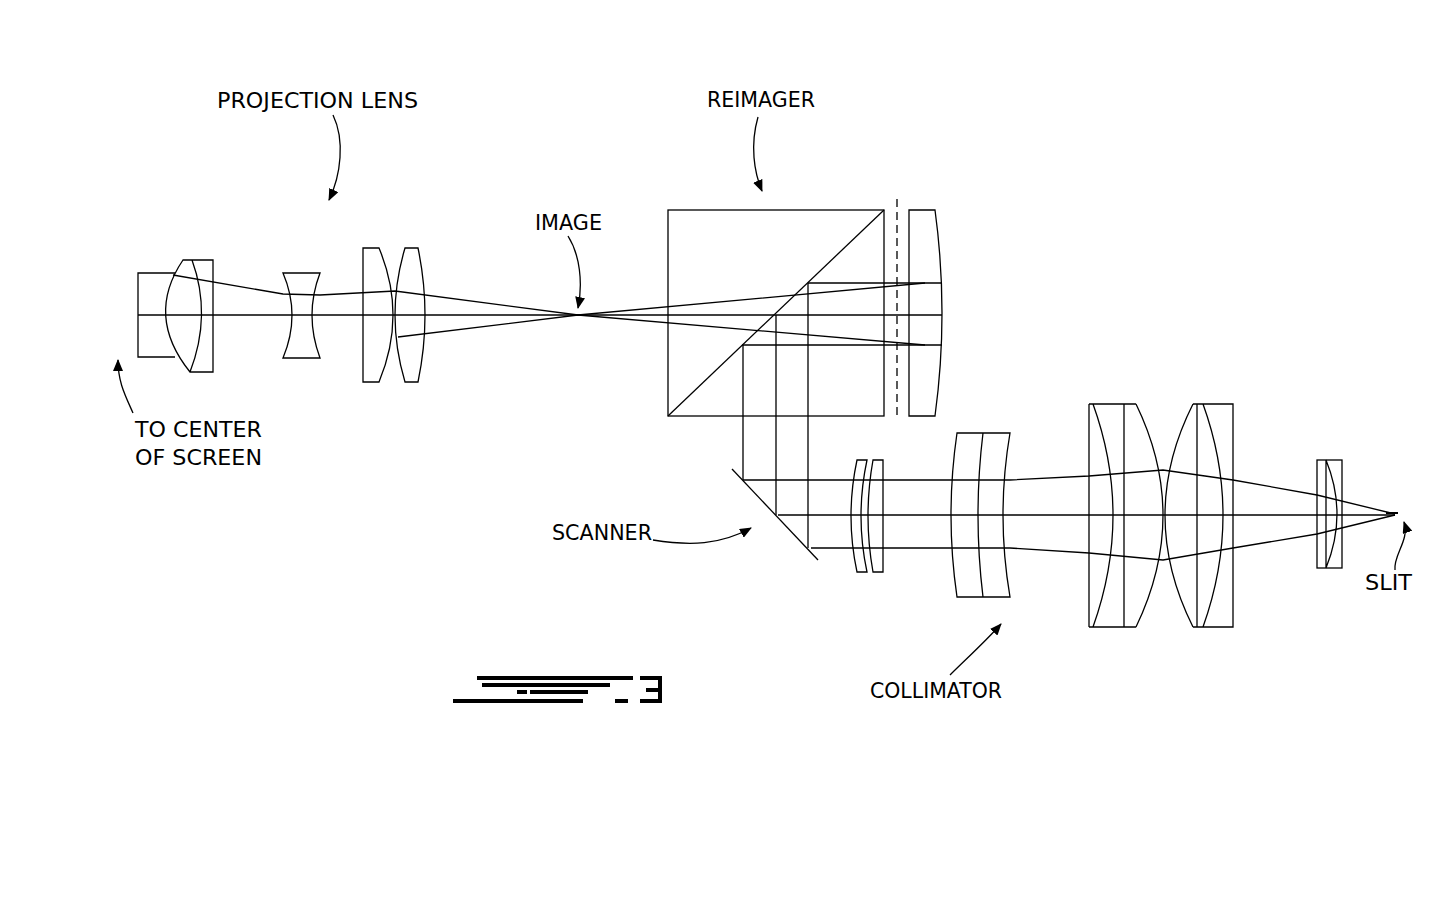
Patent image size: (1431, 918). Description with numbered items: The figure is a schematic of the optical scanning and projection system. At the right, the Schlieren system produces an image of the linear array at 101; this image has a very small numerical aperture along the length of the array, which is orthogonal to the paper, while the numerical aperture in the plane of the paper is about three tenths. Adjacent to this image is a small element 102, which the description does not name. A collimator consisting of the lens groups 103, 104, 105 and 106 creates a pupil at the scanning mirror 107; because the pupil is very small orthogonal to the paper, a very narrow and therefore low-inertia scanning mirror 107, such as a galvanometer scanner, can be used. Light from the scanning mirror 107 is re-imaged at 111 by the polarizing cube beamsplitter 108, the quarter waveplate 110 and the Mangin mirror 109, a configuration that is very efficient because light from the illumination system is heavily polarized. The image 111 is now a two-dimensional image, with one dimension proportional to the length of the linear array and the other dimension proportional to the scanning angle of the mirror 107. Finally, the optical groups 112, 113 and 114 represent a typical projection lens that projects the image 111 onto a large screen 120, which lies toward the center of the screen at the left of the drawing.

The image of the linear array 101 is at (1396, 506).
The lens 102 is at (1325, 458).
The lens group 103 is at (1218, 404).
The lens group 104 is at (1107, 404).
The lens group 105 is at (990, 433).
The lens group 106 is at (877, 572).
The scanning mirror 107 is at (777, 528).
The polarizing cube beamsplitter 108 is at (806, 282).
The Mangin mirror 109 is at (943, 244).
The quarter waveplate 110 is at (897, 199).
The image 111 is at (575, 320).
The optical group 112 is at (393, 255).
The optical group 113 is at (302, 272).
The optical group 114 is at (198, 260).
The large screen 120 is at (138, 288).